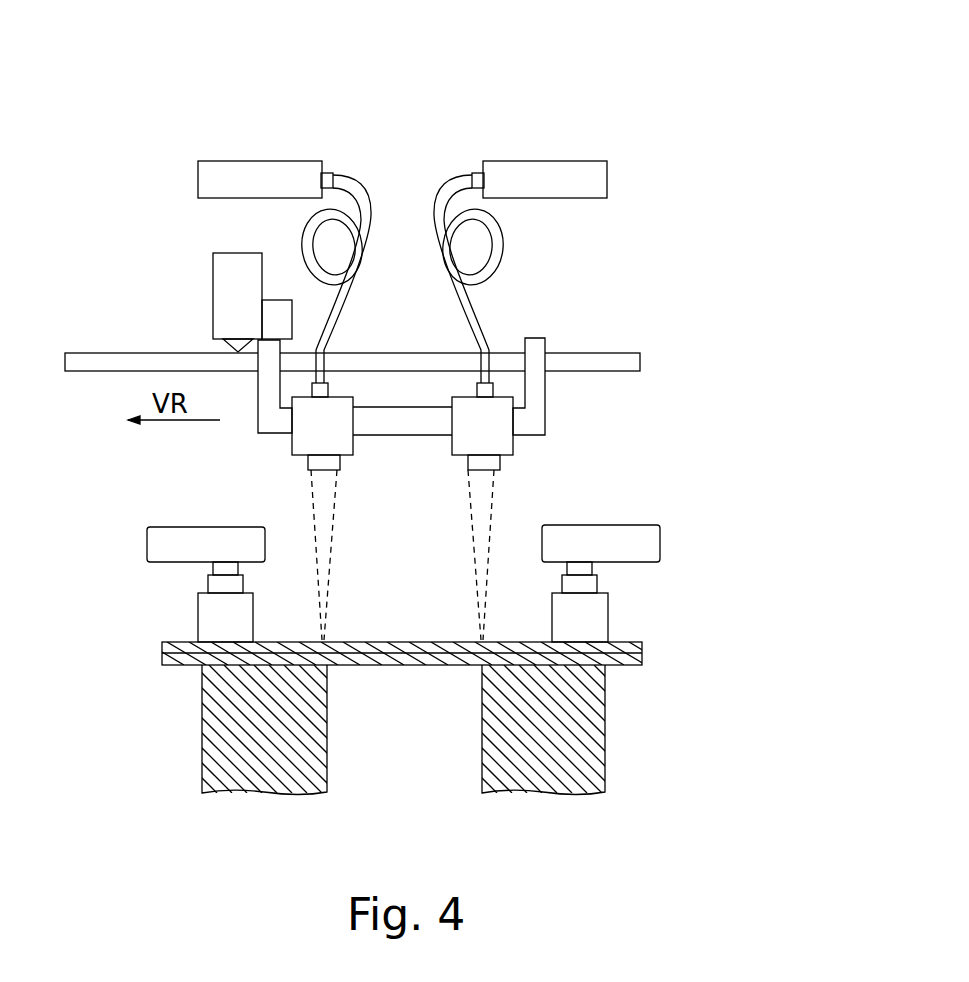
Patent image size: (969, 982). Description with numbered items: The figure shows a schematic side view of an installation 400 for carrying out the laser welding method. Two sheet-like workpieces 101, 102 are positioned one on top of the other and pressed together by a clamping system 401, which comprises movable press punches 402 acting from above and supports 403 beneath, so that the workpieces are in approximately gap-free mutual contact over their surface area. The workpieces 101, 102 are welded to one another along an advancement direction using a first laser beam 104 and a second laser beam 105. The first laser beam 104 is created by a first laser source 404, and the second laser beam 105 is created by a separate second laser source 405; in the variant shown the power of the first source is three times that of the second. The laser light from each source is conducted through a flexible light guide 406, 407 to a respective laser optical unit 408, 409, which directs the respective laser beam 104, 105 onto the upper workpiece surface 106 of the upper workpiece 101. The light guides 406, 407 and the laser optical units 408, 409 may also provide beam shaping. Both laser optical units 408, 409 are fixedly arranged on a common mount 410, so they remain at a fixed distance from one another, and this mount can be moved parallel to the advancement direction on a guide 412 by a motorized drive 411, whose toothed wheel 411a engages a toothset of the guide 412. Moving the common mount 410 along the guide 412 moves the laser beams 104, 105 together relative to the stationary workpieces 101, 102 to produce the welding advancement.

The installation 400 is at (95, 74).
The clamping system 401 is at (745, 810).
The movable press punches 402 is at (212, 620).
The supports 403 is at (262, 775).
The first laser source 404 is at (275, 177).
The second laser source 405 is at (530, 177).
The flexible light guide 406 is at (343, 175).
The flexible light guide 407 is at (471, 176).
The laser optical unit 408 is at (305, 440).
The laser optical unit 409 is at (500, 440).
The common mount 410 is at (557, 402).
The motorized drive 411 is at (223, 280).
The toothed wheel 411a is at (222, 347).
The guide 412 is at (95, 354).
The first laser beam 104 is at (332, 552).
The second laser beam 105 is at (473, 498).
The workpiece surface 106 is at (402, 636).
The workpiece 101 is at (436, 650).
The workpiece 102 is at (640, 668).